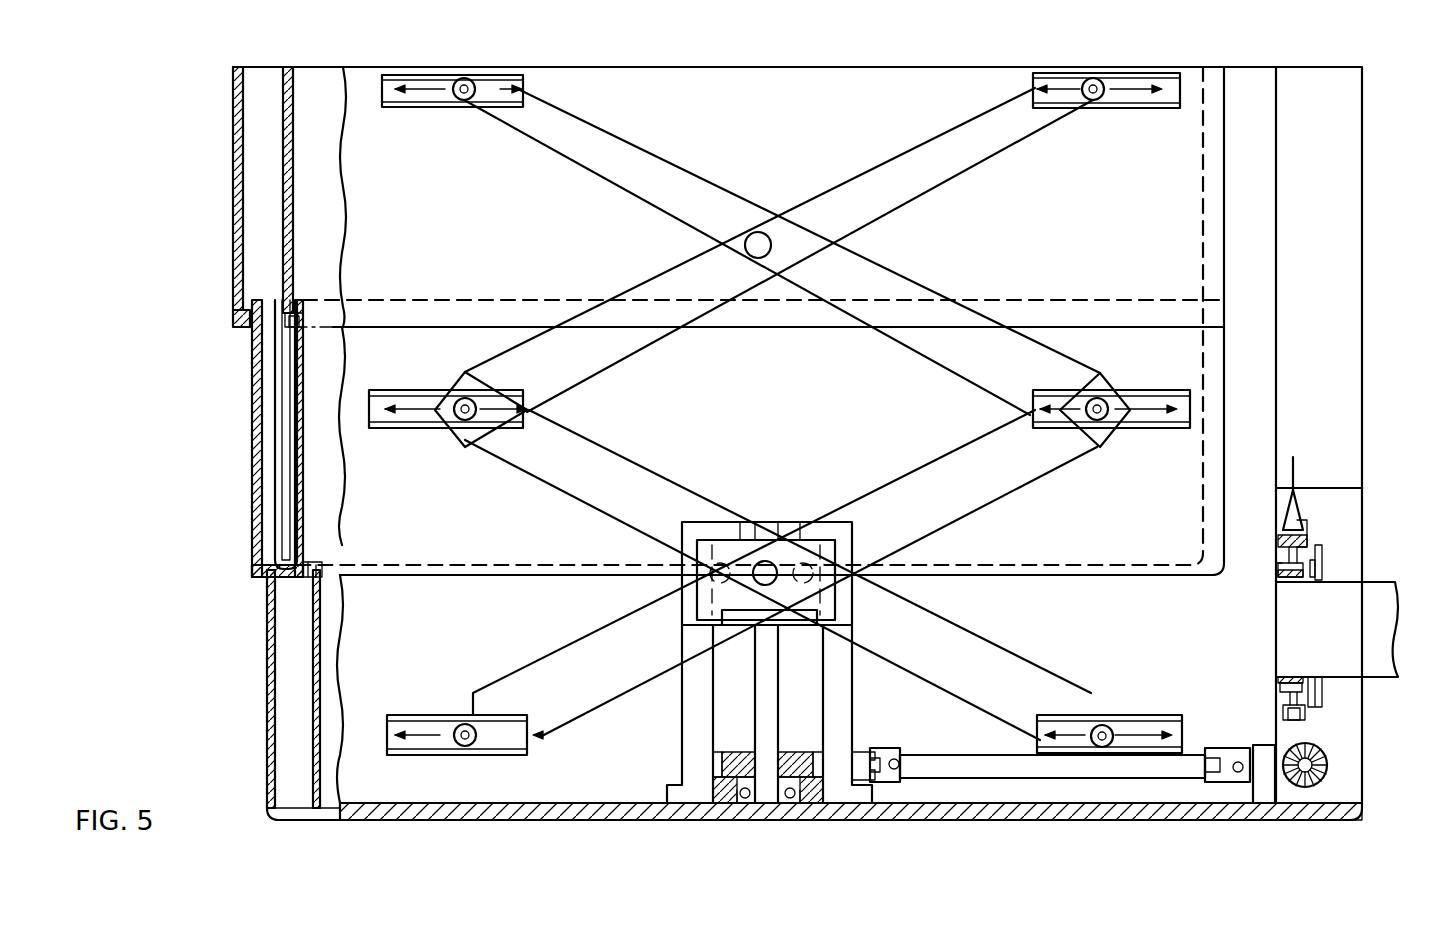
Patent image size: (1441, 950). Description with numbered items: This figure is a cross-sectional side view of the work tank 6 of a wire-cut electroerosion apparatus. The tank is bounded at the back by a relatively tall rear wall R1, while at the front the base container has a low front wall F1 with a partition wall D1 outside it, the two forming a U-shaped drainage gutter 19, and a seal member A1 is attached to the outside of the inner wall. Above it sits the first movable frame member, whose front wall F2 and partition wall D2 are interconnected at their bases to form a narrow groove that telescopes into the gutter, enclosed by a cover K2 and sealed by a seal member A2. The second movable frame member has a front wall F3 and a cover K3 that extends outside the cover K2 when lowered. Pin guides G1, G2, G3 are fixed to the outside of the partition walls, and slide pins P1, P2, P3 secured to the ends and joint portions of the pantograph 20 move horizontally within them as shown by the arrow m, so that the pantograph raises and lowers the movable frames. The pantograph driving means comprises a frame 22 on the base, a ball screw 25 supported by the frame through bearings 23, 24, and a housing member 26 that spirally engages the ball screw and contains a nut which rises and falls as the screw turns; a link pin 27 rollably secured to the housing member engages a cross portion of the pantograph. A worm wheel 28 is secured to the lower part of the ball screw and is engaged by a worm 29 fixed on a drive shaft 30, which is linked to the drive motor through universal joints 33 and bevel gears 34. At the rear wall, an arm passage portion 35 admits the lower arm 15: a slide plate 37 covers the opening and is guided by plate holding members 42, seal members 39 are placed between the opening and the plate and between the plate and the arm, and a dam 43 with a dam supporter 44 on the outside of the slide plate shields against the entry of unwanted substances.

The work tank 6 is at (962, 67).
The lower arm 15 is at (1372, 588).
The drainage gutter 19 is at (283, 808).
The pantograph 20 is at (884, 258).
The frame 22 is at (848, 722).
The bearing 23 is at (745, 522).
The bearing 24 is at (745, 805).
The ball screw 25 is at (768, 704).
The housing member 26 is at (792, 522).
The link pin 27 is at (832, 540).
The worm wheel 28 is at (738, 752).
The worm 29 is at (715, 760).
The drive shaft 30 is at (1035, 778).
The universal joint 33 is at (890, 800).
The bevel gear 34 is at (1305, 800).
The arm passage portion 35 is at (1335, 534).
The slide plate 37 is at (1275, 575).
The seal member 39 is at (1285, 640).
The plate holding member 42 is at (1312, 520).
The dam 43 is at (1318, 582).
The dam supporter 44 is at (1322, 575).
The seal member A1 is at (308, 560).
The seal member A2 is at (293, 300).
The partition wall D1 is at (267, 662).
The partition wall D2 is at (262, 408).
The front wall F1 is at (322, 647).
The front wall F2 is at (312, 457).
The front wall F3 is at (298, 186).
The pin guide G1 is at (412, 715).
The pin guide G2 is at (385, 390).
The pin guide G3 is at (410, 75).
The cover K2 is at (250, 482).
The cover K3 is at (233, 195).
The slide pin P1 is at (466, 748).
The slide pin P2 is at (462, 425).
The slide pin P3 is at (462, 100).
The rear wall R1 is at (1362, 200).
The arrow m is at (398, 104).